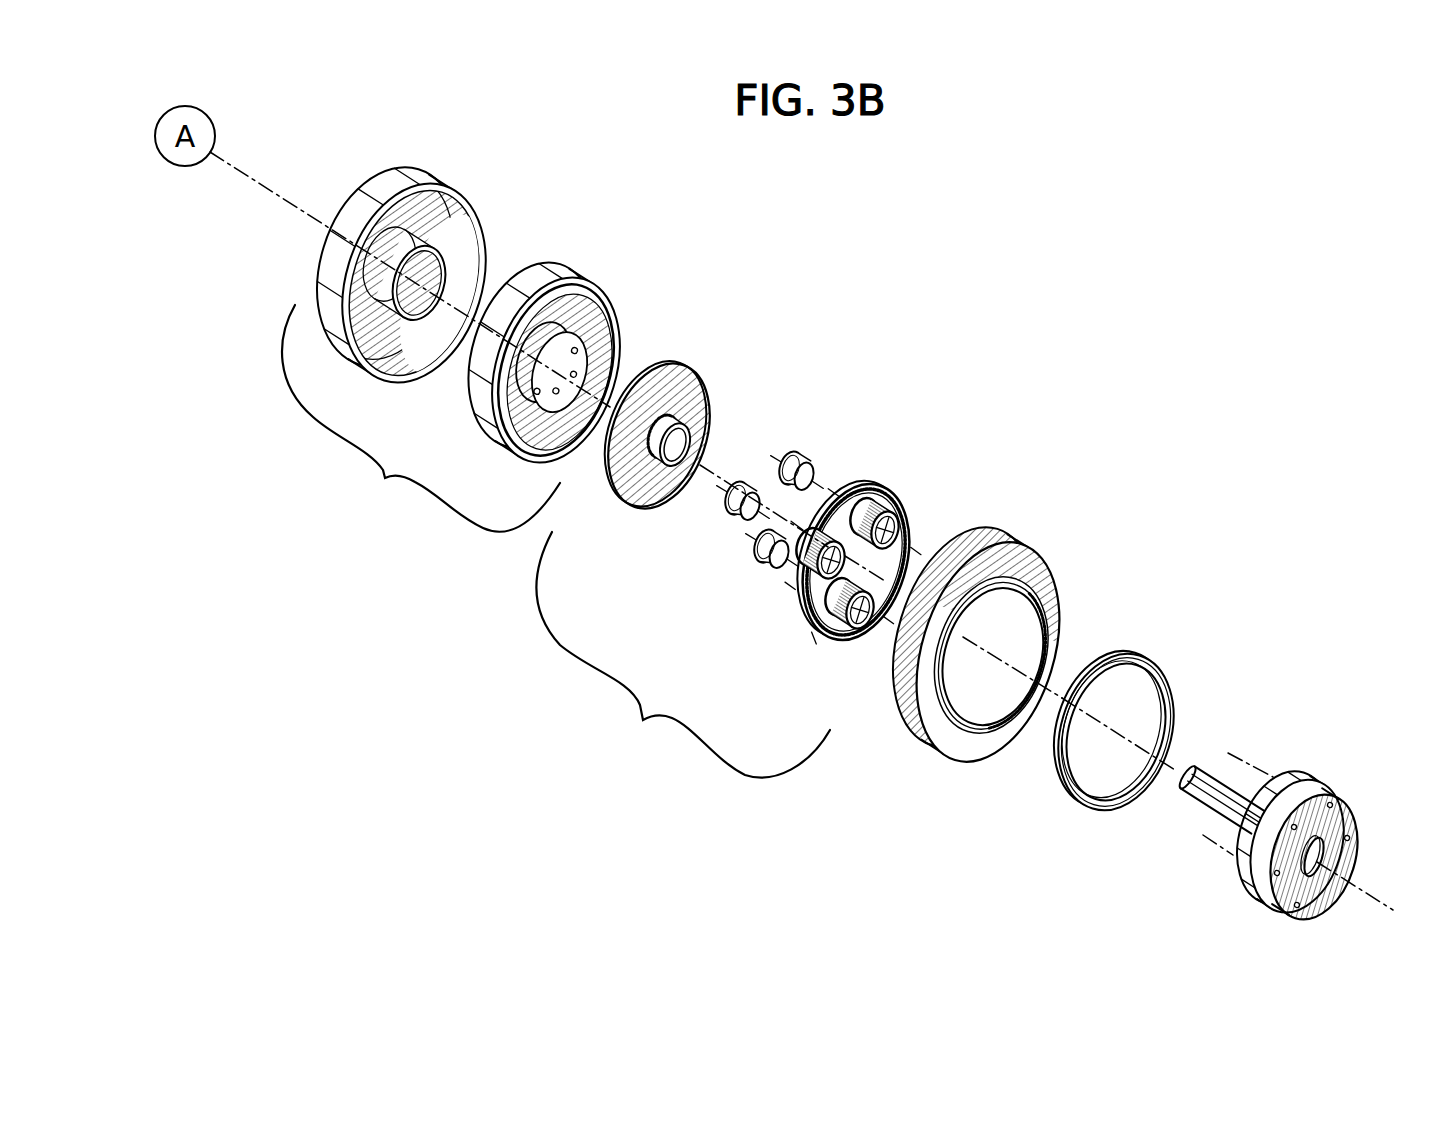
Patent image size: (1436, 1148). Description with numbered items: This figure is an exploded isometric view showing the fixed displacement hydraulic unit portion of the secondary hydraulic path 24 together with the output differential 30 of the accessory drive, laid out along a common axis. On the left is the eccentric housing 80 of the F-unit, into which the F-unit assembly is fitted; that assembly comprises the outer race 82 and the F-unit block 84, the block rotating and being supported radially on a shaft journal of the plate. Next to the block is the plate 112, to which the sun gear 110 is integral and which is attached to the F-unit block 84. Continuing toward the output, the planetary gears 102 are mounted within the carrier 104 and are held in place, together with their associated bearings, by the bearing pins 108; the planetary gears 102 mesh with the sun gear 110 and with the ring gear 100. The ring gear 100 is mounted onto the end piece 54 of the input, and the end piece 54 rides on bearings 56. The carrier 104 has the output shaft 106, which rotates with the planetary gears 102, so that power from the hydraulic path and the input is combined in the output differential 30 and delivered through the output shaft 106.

The secondary hydraulic path 24 is at (421, 418).
The output differential 30 is at (1234, 901).
The end piece 54 is at (1000, 545).
The bearings 56 is at (1118, 658).
The eccentric housing 80 is at (406, 172).
The outer race 82 is at (564, 327).
The F-unit block 84 is at (594, 334).
The ring gear 100 is at (857, 560).
The planetary gears 102 is at (906, 524).
The carrier 104 is at (1333, 818).
The output shaft 106 is at (1200, 770).
The bearing pins 108 is at (799, 460).
The sun gear 110 is at (692, 440).
The plate 112 is at (693, 409).